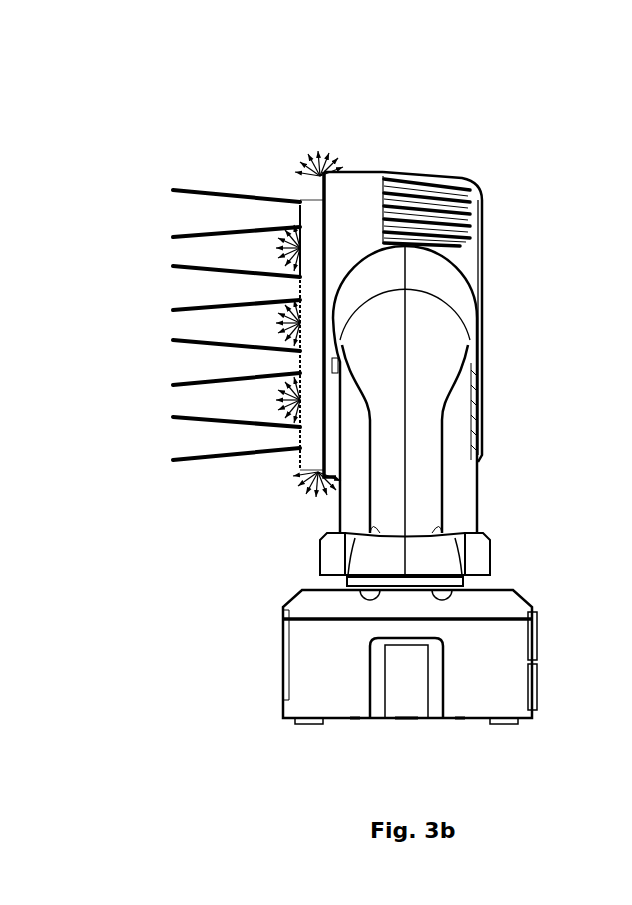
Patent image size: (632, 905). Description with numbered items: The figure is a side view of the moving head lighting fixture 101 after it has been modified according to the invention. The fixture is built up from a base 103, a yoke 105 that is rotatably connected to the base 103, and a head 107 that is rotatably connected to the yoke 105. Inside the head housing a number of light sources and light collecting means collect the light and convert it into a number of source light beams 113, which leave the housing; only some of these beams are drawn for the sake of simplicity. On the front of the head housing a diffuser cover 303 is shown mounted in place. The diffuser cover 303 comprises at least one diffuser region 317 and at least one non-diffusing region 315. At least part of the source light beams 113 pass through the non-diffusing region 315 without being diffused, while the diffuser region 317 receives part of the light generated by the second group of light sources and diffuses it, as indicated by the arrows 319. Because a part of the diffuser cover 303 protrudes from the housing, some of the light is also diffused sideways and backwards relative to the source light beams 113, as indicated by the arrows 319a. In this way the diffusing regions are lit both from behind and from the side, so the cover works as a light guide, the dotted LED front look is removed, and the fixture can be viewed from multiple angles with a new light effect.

The moving head lighting fixture 101 is at (412, 94).
The base 103 is at (366, 740).
The yoke 105 is at (491, 335).
The head 107 is at (503, 216).
The source light beams 113 is at (220, 325).
The diffuser cover 303 is at (296, 198).
The non-diffusing region 315 is at (300, 325).
The diffuser region 317 is at (301, 275).
The arrows indicating diffused light 319 is at (300, 393).
The arrows indicating sideways and backwards diffused light 319a is at (335, 158).